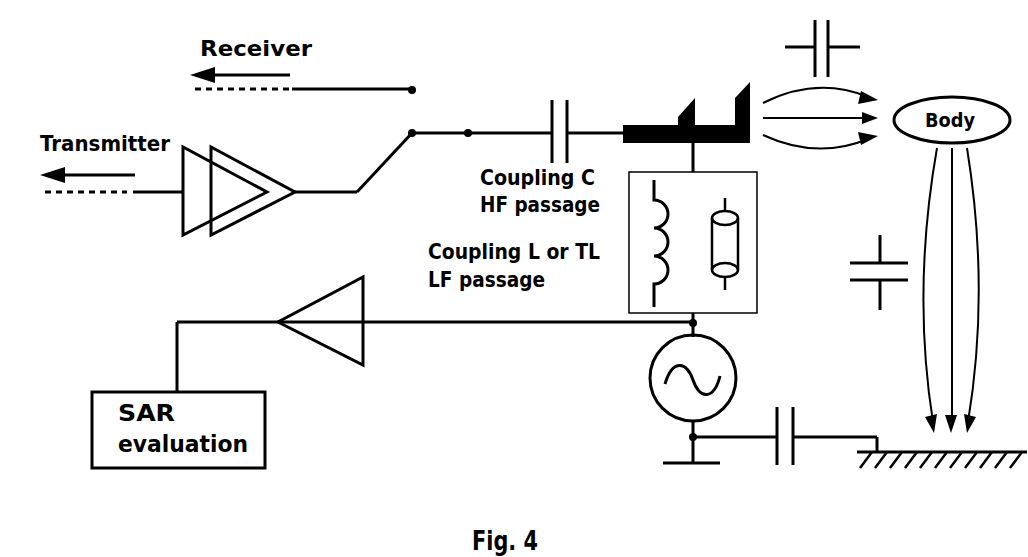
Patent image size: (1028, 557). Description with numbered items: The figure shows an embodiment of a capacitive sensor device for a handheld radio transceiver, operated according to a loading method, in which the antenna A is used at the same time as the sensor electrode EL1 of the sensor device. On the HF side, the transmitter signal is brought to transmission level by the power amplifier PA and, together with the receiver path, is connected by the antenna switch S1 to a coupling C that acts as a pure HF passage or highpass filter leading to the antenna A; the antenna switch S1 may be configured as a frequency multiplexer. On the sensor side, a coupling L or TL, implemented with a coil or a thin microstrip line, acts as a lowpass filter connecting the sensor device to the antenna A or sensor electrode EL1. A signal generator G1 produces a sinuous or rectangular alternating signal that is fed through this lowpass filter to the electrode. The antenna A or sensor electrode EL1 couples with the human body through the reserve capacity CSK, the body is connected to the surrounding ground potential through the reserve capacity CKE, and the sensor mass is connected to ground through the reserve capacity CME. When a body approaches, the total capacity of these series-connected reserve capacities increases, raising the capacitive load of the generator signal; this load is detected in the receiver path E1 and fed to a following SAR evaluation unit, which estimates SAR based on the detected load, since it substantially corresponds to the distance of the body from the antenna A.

The power amplifier PA is at (239, 184).
The antenna switch S1 is at (414, 160).
The antenna A is at (686, 107).
The sensor electrode EL1 is at (686, 107).
The receiver path E1 is at (320, 313).
The signal generator G1 is at (674, 378).
The reserve capacity CSK is at (831, 50).
The reserve capacity CKE is at (869, 269).
The reserve capacity CME is at (785, 431).